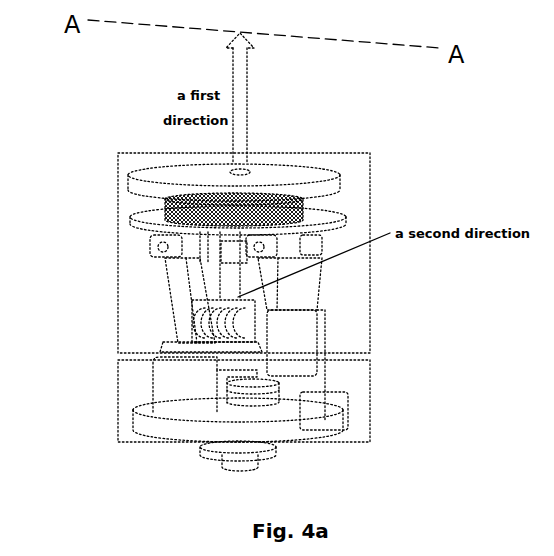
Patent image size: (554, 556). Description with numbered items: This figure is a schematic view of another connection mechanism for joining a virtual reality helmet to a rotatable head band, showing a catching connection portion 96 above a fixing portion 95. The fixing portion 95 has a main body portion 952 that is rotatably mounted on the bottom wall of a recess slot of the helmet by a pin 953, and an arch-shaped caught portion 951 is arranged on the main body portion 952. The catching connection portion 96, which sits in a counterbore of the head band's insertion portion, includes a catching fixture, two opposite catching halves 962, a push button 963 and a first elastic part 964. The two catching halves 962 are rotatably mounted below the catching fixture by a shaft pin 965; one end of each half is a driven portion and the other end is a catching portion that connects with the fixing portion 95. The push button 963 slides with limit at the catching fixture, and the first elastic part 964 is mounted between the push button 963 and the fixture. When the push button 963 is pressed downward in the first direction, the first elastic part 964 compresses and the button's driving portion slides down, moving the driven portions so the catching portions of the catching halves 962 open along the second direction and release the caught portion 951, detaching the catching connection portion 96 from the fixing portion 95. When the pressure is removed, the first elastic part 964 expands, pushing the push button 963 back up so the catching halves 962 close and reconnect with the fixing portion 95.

The catching connection portion 96 is at (372, 171).
The push button 963 is at (263, 180).
The first elastic part 964 is at (172, 216).
The shaft pin 965 is at (158, 242).
The catching halves 962 is at (180, 277).
The fixing portion 95 is at (374, 423).
The caught portion 951 is at (323, 402).
The main body portion 952 is at (282, 425).
The pin 953 is at (243, 442).